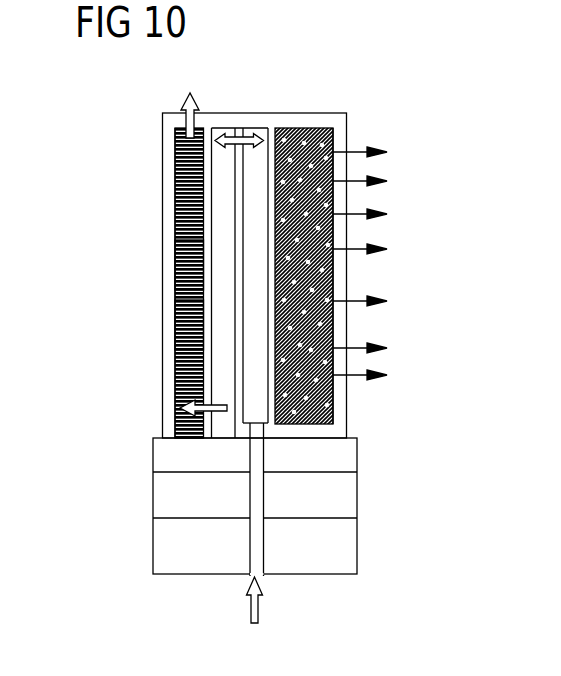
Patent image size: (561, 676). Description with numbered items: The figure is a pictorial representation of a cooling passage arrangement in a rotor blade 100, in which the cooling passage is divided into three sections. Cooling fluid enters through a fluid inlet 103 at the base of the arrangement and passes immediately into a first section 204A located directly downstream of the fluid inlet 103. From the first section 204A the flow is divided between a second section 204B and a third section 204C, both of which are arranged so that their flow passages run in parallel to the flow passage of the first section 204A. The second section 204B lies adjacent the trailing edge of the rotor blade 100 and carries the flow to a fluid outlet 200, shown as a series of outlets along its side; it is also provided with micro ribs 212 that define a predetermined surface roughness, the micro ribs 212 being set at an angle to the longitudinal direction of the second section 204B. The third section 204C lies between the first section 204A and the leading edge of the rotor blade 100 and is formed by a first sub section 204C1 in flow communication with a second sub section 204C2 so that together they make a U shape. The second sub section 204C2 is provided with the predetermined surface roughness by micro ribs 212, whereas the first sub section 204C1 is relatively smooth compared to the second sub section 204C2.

The rotor blade 100 is at (371, 92).
The fluid inlet 103 is at (250, 540).
The fluid outlet 200 is at (168, 181).
The micro ribs 212 is at (176, 221).
The first section 204A is at (257, 126).
The second section 204B is at (316, 127).
The third section 204C is at (218, 386).
The first sub section 204C1 is at (218, 328).
The second sub section 204C2 is at (180, 266).